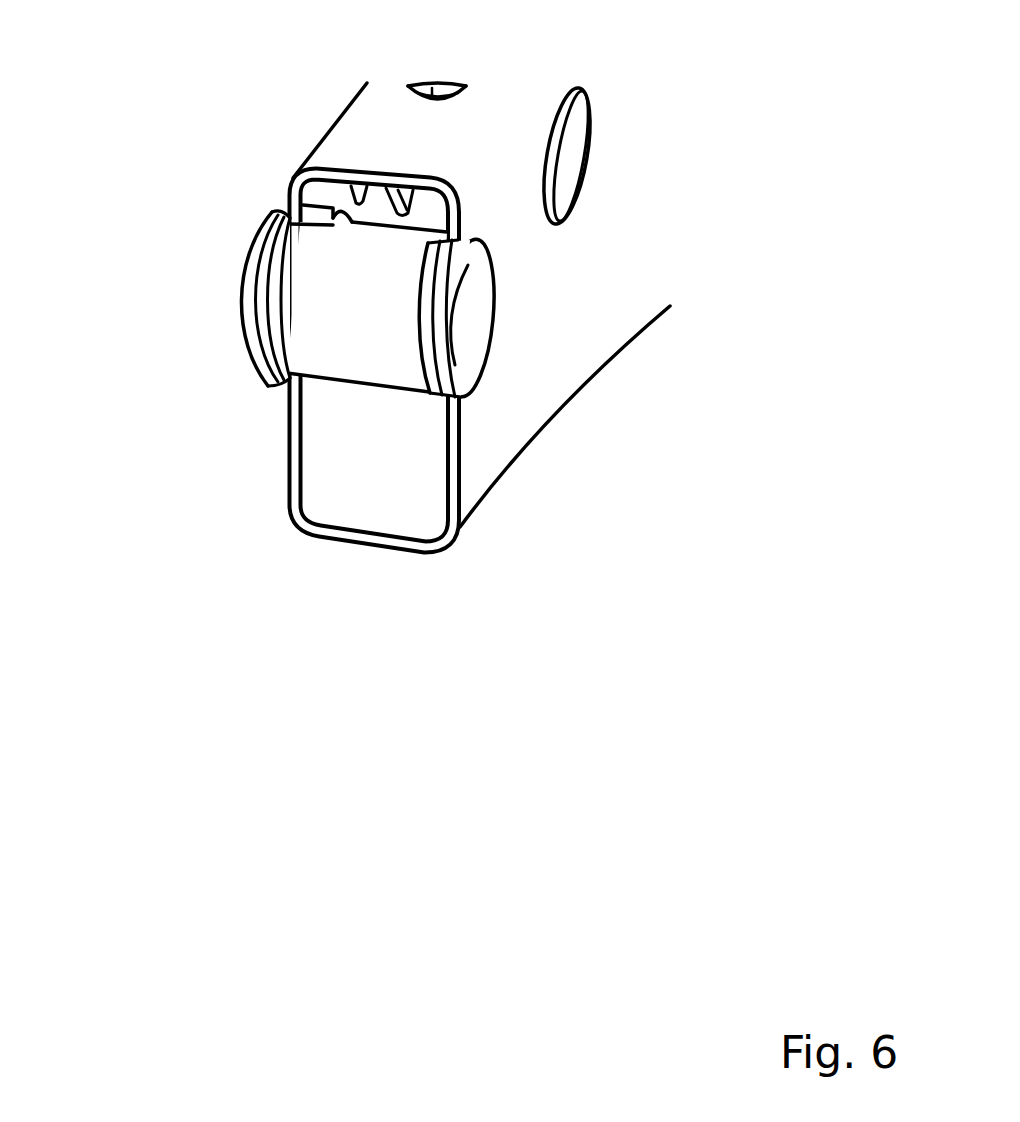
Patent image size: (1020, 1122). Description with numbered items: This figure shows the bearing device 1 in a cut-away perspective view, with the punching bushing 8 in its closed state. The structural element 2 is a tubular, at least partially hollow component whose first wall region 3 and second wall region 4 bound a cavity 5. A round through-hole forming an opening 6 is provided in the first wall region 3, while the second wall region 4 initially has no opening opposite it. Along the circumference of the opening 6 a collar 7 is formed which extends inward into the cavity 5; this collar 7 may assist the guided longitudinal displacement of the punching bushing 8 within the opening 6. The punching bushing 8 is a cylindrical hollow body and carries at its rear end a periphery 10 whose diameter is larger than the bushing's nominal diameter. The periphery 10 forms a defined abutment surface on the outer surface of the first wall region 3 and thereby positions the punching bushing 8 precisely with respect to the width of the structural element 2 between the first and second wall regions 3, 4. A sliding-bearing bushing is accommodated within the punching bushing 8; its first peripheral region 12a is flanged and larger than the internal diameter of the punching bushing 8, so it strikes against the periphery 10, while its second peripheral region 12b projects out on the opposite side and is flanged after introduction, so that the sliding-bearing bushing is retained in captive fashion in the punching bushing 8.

The bearing device 1 is at (702, 405).
The structural element 2 is at (640, 312).
The first wall region 3 is at (293, 407).
The second wall region 4 is at (502, 423).
The cavity 5 is at (397, 505).
The opening 6 is at (300, 225).
The collar 7 is at (302, 217).
The punching bushing 8 is at (357, 370).
The periphery 10 is at (263, 243).
The first peripheral region 12a is at (243, 273).
The second peripheral region 12b is at (475, 253).